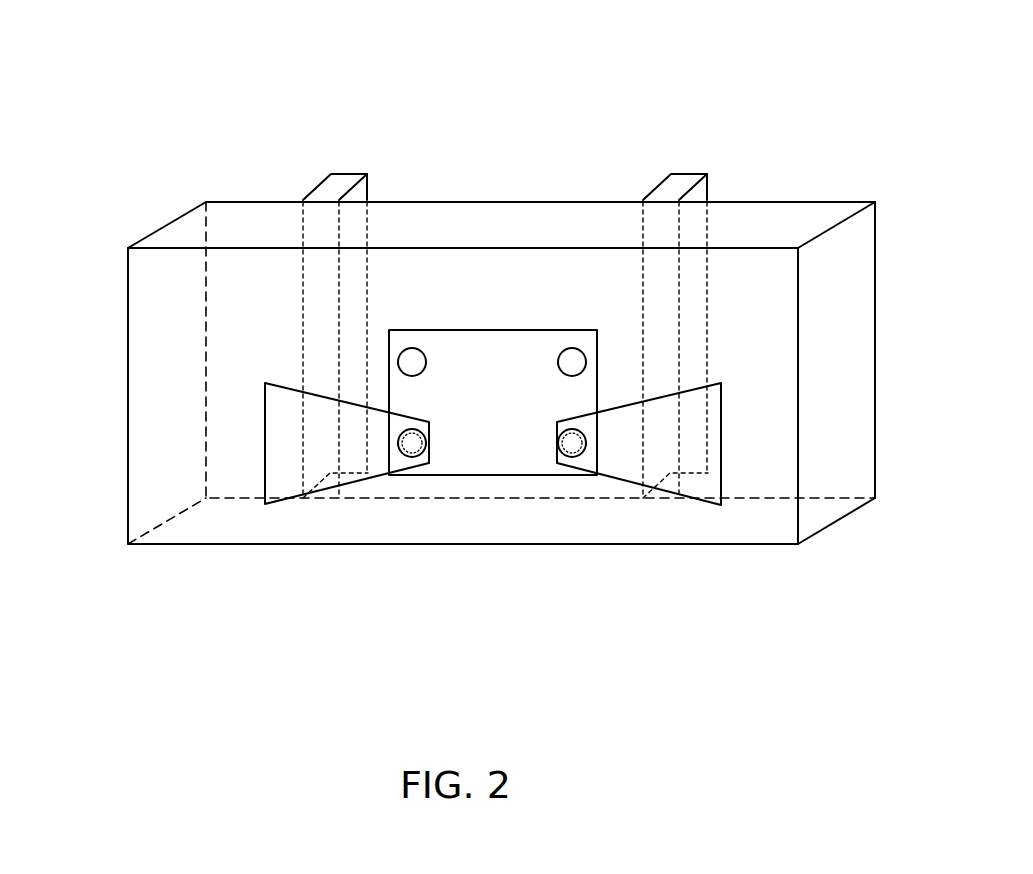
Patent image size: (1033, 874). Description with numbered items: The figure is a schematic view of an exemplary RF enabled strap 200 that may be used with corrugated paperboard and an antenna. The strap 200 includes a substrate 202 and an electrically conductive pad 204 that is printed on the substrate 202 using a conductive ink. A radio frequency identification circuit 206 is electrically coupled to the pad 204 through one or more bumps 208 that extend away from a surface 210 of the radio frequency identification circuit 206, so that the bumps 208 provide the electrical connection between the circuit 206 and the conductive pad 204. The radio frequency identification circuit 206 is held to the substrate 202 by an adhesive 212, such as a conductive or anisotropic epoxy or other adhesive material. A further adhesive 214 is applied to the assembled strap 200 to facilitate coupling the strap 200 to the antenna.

The RF enabled strap 200 is at (647, 57).
The substrate 202 is at (137, 482).
The electrically conductive pad 204 is at (291, 482).
The radio frequency identification circuit 206 is at (493, 308).
The bumps 208 is at (558, 460).
The surface 210 is at (507, 348).
The adhesive 212 is at (408, 462).
The adhesive 214 is at (345, 174).